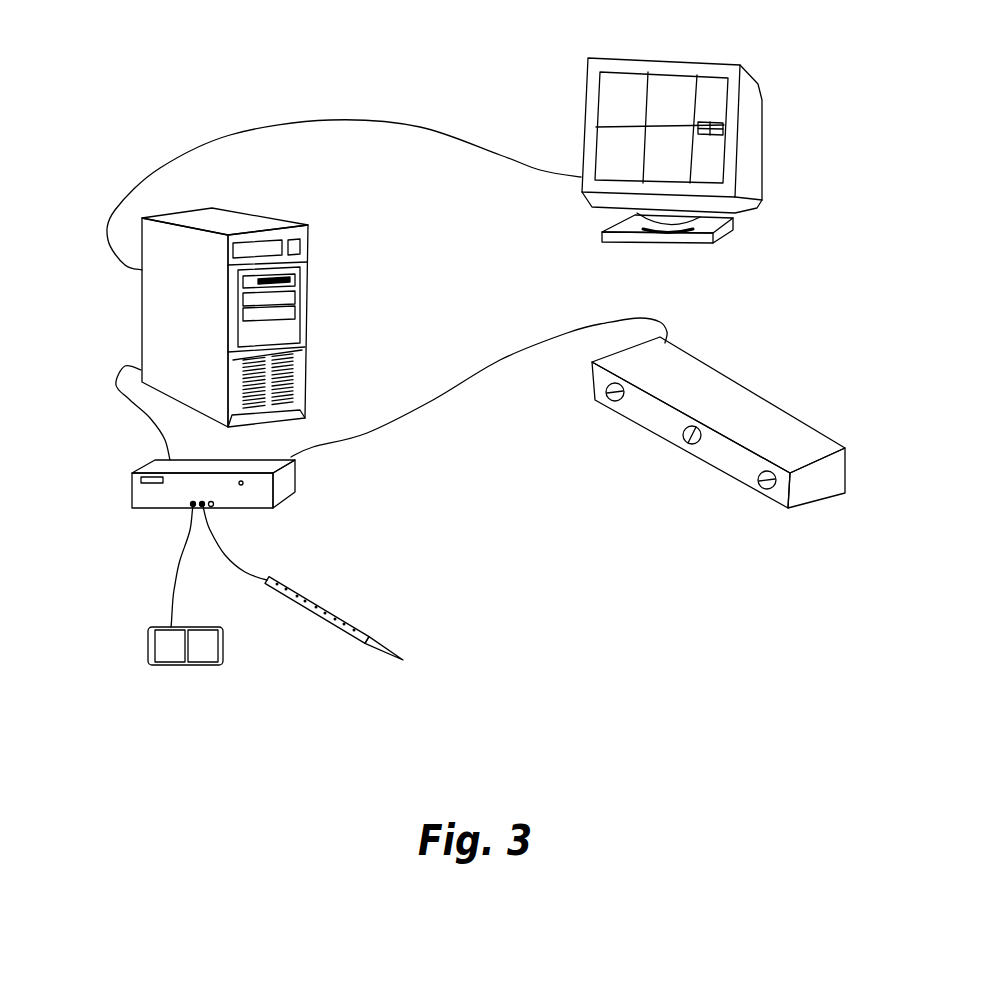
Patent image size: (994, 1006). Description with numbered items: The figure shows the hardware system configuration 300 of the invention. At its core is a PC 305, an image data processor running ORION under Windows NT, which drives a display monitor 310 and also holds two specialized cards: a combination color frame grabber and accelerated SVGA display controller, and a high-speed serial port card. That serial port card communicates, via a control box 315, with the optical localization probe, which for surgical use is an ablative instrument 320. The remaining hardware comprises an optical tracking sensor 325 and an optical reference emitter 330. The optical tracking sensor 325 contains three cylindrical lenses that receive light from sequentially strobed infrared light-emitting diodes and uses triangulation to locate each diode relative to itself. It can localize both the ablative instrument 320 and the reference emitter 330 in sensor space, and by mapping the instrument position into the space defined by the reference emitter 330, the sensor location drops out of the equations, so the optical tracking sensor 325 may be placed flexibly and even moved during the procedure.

The hardware system configuration 300 is at (371, 77).
The PC 305 is at (310, 313).
The display monitor 310 is at (762, 83).
The control box 315 is at (130, 490).
The ablative instrument 320 is at (345, 620).
The optical tracking sensor 325 is at (732, 392).
The optical reference emitter 330 is at (173, 580).